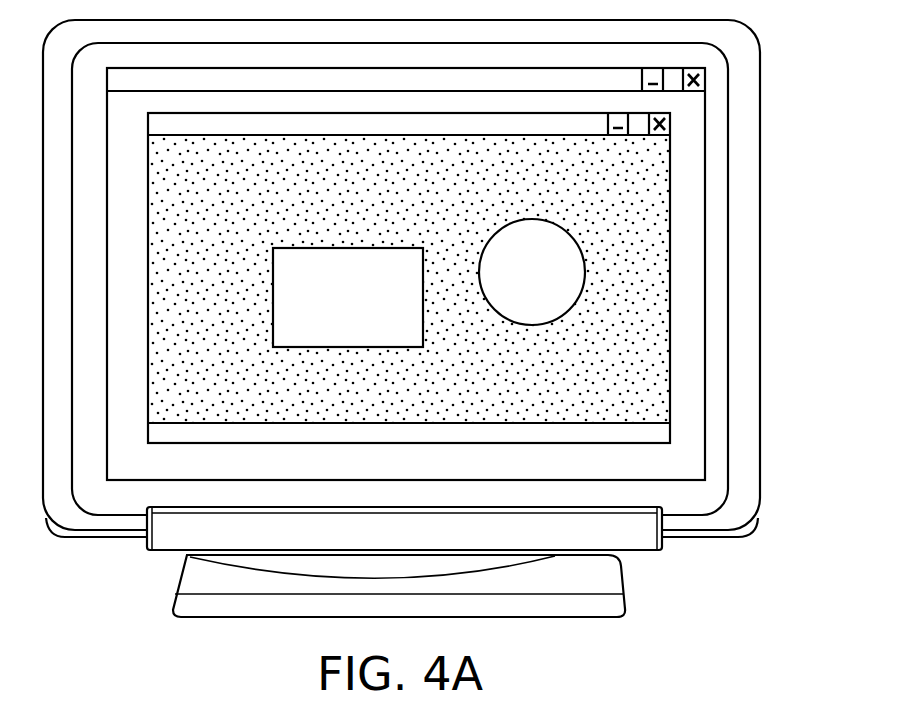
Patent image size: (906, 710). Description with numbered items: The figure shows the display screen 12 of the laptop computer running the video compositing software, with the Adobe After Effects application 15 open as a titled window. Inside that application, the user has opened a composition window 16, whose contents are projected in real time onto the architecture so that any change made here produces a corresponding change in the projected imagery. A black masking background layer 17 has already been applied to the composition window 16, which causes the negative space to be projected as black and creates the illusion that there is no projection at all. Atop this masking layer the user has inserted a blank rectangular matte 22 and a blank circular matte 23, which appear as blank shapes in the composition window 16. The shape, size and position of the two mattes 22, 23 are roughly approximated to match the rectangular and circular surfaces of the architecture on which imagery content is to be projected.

The display screen 12 is at (747, 503).
The Adobe After Effects application 15 is at (695, 230).
The composition window 16 is at (648, 283).
The black masking background layer 17 is at (173, 423).
The blank rectangular matte 22 is at (328, 314).
The blank circular matte 23 is at (516, 284).